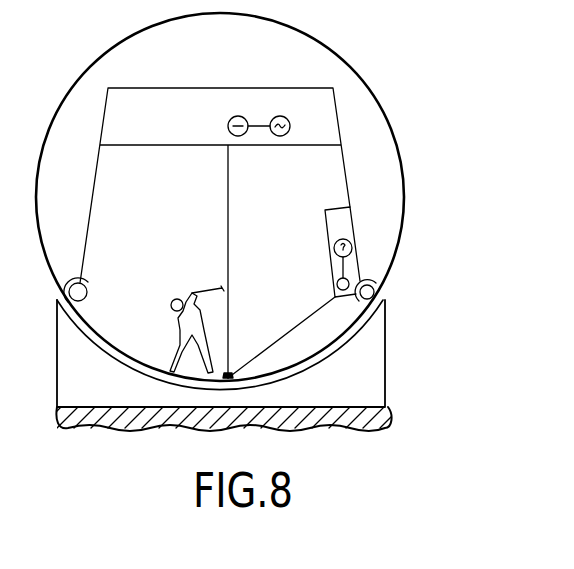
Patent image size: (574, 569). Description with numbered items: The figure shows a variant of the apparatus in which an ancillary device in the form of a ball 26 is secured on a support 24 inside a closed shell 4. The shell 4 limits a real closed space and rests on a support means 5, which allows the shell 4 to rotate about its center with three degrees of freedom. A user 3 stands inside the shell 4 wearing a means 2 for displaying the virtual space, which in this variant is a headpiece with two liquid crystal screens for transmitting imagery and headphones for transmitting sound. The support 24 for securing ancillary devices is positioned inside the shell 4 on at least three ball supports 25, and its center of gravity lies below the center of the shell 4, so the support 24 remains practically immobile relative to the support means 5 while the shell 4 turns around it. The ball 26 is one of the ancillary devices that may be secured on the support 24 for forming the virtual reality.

The means for displaying the virtual space 2 is at (190, 293).
The user 3 is at (177, 324).
The closed shell 4 is at (392, 126).
The support means 5 is at (407, 355).
The support for securing ancillary devices 24 is at (340, 172).
The ball supports 25 is at (369, 291).
The ball 26 is at (237, 372).